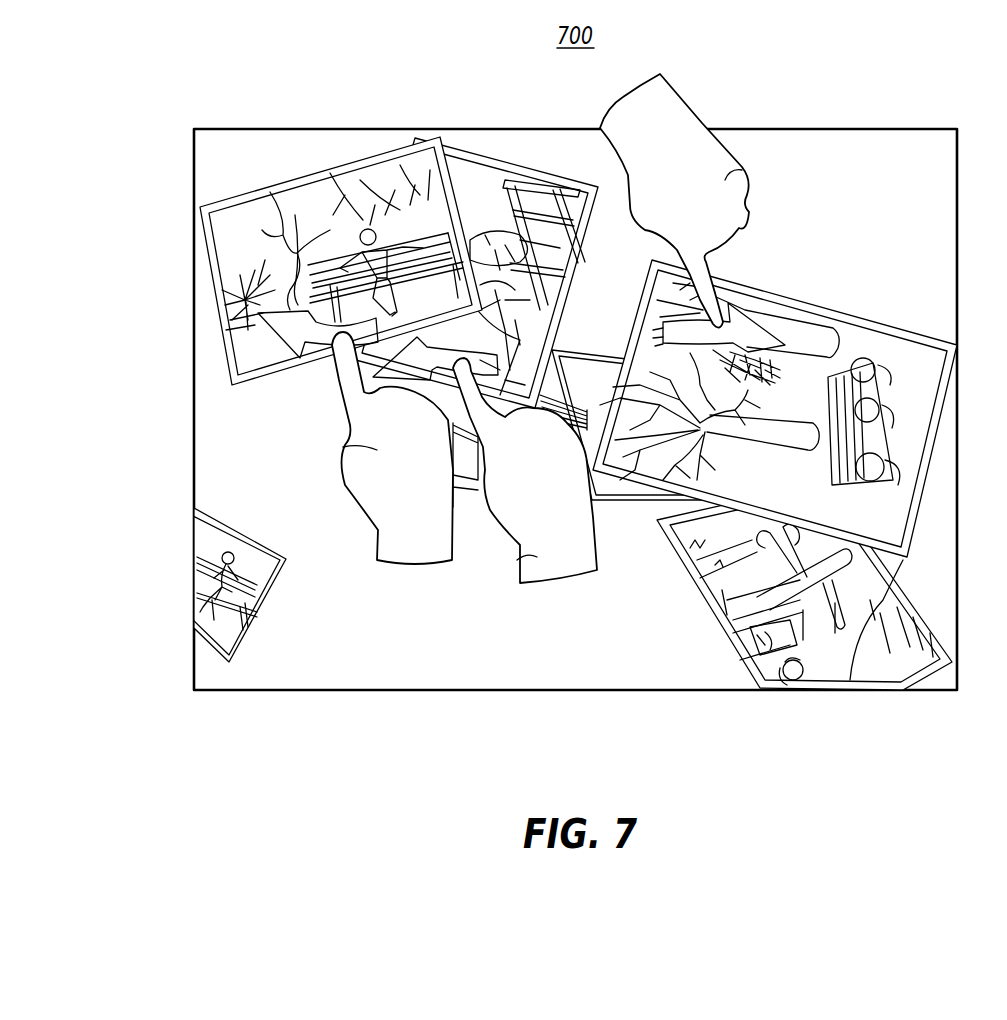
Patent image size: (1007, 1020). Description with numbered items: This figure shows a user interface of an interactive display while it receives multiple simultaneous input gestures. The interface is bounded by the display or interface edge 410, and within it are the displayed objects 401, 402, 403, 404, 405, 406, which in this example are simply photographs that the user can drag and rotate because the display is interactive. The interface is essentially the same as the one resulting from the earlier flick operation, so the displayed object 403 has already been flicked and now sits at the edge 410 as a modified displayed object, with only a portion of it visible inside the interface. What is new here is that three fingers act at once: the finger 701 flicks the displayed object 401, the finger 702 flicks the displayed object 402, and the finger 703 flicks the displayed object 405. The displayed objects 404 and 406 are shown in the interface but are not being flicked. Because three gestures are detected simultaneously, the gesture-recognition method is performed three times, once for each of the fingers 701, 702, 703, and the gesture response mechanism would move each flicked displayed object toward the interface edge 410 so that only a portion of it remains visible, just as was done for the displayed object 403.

The display or interface edge 410 is at (194, 168).
The displayed object 401 is at (291, 170).
The displayed object 402 is at (538, 172).
The displayed object 403 is at (242, 533).
The displayed object 404 is at (588, 337).
The displayed object 405 is at (817, 300).
The displayed object 406 is at (700, 613).
The finger 701 is at (343, 447).
The finger 702 is at (518, 560).
The finger 703 is at (745, 168).